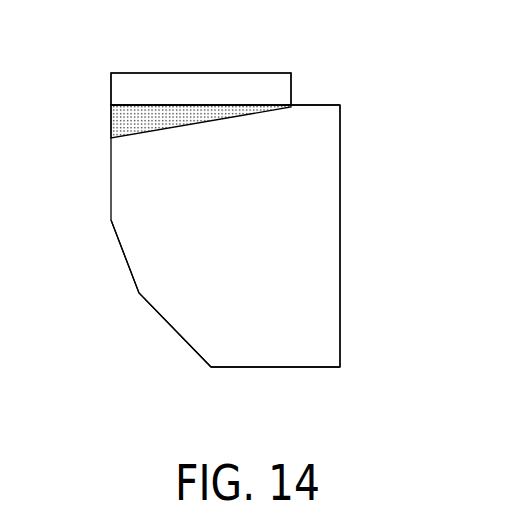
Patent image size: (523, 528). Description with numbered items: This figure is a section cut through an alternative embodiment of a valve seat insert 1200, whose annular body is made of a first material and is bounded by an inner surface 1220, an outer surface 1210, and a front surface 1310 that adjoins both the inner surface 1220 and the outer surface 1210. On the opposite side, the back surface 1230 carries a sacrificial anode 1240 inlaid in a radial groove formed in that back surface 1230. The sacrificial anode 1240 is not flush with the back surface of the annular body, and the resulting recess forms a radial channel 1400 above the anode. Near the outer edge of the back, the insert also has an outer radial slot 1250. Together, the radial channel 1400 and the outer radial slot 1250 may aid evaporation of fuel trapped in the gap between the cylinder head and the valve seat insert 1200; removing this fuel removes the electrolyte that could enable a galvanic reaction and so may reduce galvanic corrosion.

The valve seat insert 1200 is at (70, 129).
The outer surface 1210 is at (352, 265).
The inner surface 1220 is at (105, 313).
The back surface 1230 is at (138, 62).
The sacrificial anode 1240 is at (183, 118).
The outer radial slot 1250 is at (315, 95).
The front surface 1310 is at (295, 380).
The radial channel 1400 is at (260, 78).